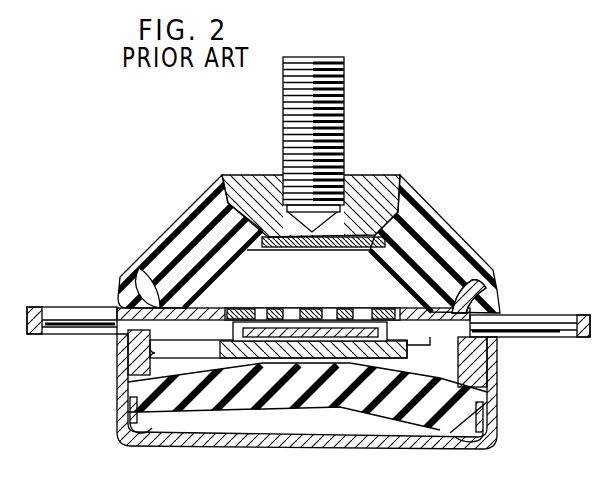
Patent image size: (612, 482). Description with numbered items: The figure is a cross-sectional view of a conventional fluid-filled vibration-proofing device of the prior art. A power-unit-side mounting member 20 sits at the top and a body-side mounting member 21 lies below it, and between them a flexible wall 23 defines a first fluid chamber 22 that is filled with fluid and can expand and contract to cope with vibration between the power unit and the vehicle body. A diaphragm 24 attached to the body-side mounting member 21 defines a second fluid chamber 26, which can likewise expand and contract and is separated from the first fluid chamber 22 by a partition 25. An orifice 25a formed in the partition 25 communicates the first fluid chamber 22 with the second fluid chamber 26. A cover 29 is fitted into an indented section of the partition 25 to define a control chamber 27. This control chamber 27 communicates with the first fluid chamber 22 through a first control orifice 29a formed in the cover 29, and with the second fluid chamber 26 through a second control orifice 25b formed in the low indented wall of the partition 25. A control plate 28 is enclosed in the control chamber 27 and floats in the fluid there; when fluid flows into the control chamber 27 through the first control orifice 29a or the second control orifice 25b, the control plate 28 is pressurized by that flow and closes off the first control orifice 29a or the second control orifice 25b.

The power-unit-side mounting member 20 is at (378, 187).
The body-side mounting member 21 is at (582, 317).
The first fluid chamber 22 is at (237, 265).
The flexible wall 23 is at (432, 212).
The diaphragm 24 is at (172, 408).
The partition 25 is at (483, 371).
The orifice 25a is at (203, 313).
The second control orifice 25b is at (292, 360).
The second fluid chamber 26 is at (146, 363).
The control chamber 27 is at (218, 340).
The control plate 28 is at (277, 329).
The cover 29 is at (386, 324).
The first control orifice 29a is at (357, 313).